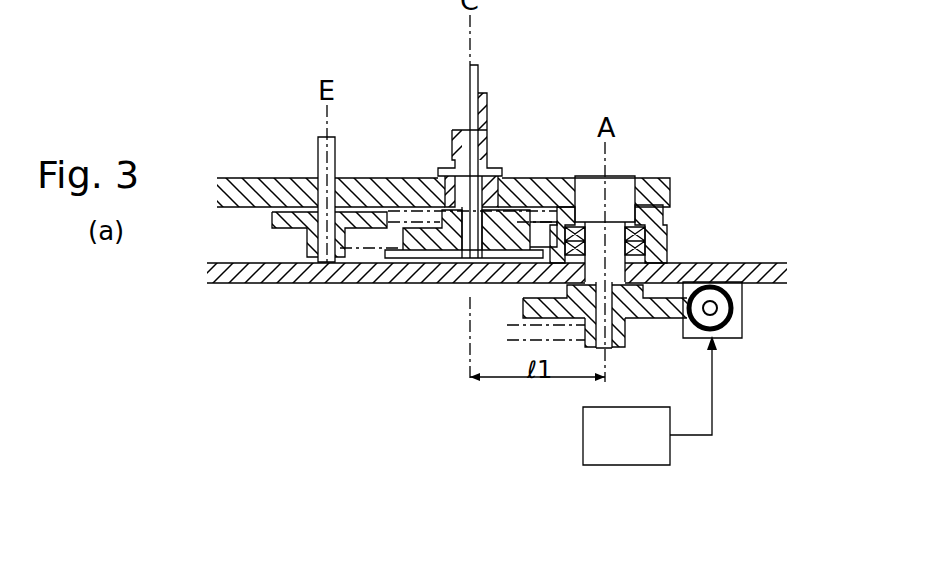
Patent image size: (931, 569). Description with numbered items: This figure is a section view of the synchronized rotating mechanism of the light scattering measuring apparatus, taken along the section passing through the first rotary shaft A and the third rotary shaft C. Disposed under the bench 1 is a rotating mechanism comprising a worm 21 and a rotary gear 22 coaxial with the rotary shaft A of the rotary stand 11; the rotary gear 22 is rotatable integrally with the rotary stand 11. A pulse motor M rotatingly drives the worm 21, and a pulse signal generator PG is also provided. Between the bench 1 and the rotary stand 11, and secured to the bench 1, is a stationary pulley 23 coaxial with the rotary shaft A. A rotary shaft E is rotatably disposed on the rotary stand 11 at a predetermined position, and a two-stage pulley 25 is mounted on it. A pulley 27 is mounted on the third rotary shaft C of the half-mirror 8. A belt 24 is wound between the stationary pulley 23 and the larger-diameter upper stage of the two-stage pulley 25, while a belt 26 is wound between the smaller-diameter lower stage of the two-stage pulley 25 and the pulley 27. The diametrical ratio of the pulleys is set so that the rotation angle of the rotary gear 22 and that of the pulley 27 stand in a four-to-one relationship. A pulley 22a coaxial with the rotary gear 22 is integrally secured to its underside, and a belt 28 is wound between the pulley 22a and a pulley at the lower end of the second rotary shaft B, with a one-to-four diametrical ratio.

The bench 1 is at (232, 284).
The half-mirror 8 is at (480, 80).
The rotary stand 11 is at (222, 178).
The worm 21 is at (728, 322).
The rotary gear 22 is at (530, 310).
The pulley 22a is at (627, 340).
The stationary pulley 23 is at (653, 212).
The belt 24 is at (387, 178).
The two-stage pulley 25 is at (278, 207).
The belt 26 is at (380, 250).
The pulley 27 is at (432, 246).
The belt 28 is at (567, 343).
The pulse motor M is at (745, 290).
The pulse signal generator PG is at (630, 468).